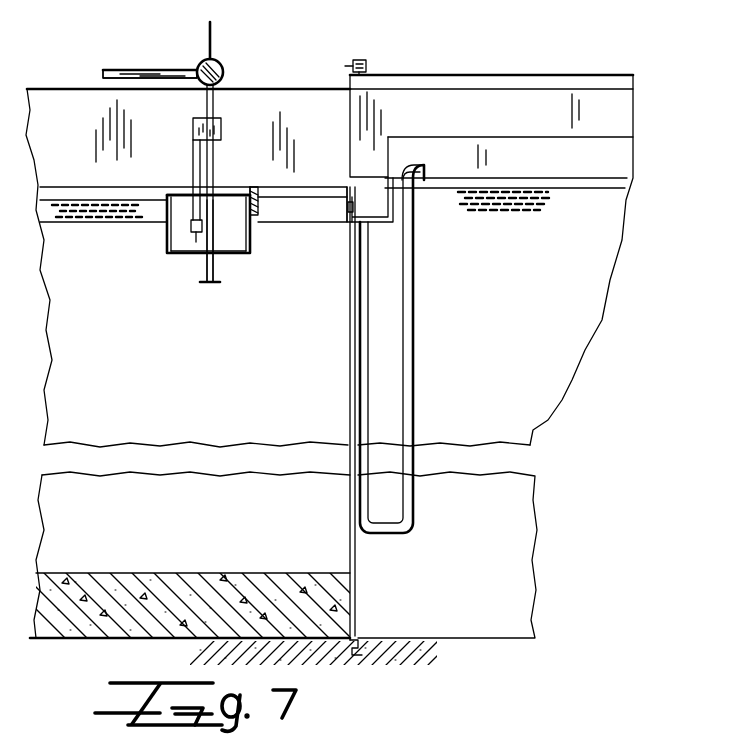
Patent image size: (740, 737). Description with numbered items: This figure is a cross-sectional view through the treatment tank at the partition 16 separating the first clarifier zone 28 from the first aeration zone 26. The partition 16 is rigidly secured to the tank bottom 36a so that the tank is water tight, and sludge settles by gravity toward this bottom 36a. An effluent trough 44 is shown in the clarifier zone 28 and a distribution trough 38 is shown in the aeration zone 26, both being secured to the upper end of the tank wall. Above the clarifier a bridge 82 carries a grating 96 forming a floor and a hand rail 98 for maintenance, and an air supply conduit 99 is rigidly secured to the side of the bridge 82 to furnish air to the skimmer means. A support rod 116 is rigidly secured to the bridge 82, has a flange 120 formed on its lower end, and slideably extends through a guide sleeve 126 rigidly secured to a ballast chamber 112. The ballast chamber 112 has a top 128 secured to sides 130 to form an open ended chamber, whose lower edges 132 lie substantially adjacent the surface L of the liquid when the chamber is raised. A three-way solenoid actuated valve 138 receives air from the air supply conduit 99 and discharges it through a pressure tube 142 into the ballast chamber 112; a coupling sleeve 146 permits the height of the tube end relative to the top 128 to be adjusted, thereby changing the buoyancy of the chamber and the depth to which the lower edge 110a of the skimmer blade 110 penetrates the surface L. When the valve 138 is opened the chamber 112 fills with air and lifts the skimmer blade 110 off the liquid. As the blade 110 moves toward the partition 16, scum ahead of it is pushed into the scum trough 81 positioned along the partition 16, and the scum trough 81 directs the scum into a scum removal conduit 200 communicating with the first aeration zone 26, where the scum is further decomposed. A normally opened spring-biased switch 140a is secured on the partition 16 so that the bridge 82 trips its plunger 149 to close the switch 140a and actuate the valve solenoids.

The first clarifier zone 28 is at (90, 378).
The effluent trough 44 is at (68, 194).
The surface of the liquid L is at (97, 198).
The grating 96 is at (157, 70).
The bridge 82 is at (123, 64).
The hand rail 98 is at (212, 45).
The air supply conduit 99 is at (221, 65).
The support rod 116 is at (213, 106).
The flange 120 is at (213, 286).
The three-way solenoid actuated valve 138 is at (222, 126).
The pressure tube 142 is at (192, 160).
The coupling sleeve 146 is at (193, 230).
The ballast chamber 112 is at (167, 227).
The top 128 is at (228, 192).
The side 130 is at (170, 251).
The edge 132 is at (172, 257).
The guide sleeve 126 is at (216, 238).
The skimmer blade 110 is at (262, 203).
The lower edge of skimmer blade 110a is at (262, 226).
The distribution trough 38 is at (603, 166).
The first aeration zone 26 is at (535, 370).
The normally opened spring-biased switch 140a is at (362, 62).
The plunger 149 is at (345, 64).
The scum trough 81 is at (382, 222).
The partition 16 is at (348, 378).
The scum removal conduit 200 is at (370, 308).
The bottom of the clarifier tank 36a is at (358, 600).